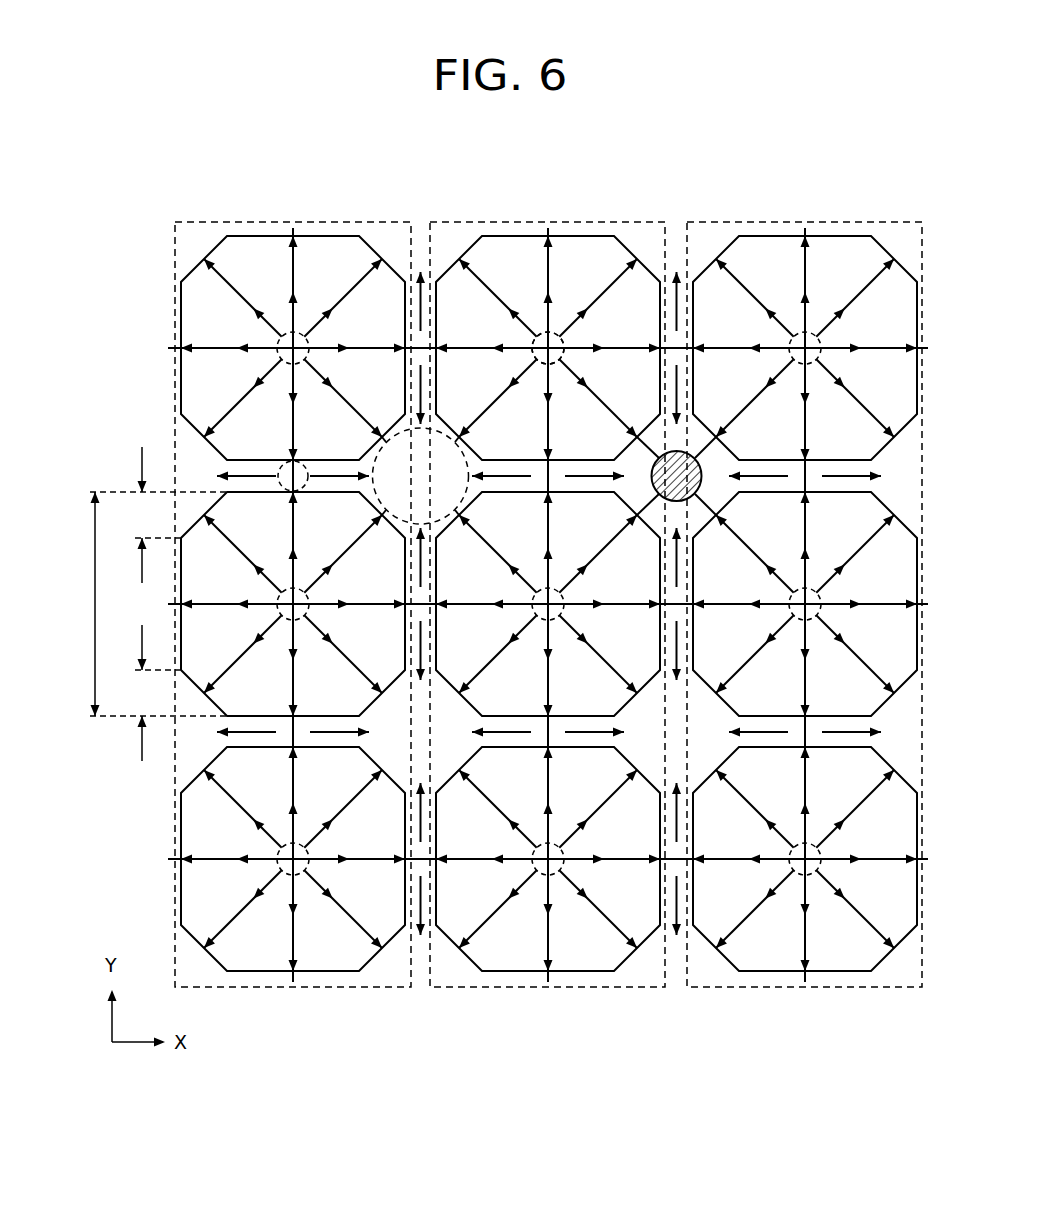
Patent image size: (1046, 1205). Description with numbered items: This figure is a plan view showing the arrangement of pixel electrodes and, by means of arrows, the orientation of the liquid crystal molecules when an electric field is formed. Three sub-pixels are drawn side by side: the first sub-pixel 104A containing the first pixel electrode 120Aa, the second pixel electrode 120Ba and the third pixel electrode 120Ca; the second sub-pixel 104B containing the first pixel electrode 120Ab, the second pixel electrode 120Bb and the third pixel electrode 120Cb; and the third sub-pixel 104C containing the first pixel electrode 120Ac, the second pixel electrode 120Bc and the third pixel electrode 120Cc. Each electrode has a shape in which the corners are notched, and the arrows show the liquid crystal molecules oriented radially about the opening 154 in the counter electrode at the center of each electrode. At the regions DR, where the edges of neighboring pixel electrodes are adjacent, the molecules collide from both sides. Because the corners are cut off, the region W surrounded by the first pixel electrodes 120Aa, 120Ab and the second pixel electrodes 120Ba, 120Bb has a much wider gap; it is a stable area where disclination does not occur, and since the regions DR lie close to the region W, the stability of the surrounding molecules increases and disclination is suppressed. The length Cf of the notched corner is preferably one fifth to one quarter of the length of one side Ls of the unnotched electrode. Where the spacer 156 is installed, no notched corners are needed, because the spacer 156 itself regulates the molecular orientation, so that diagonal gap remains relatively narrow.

The first sub-pixel 104A is at (190, 220).
The second sub-pixel 104B is at (447, 220).
The third sub-pixel 104C is at (702, 220).
The second pixel electrode 120Ba is at (291, 273).
The second pixel electrode 120Bb is at (546, 273).
The second pixel electrode 120Bc is at (800, 273).
The first pixel electrode 120Aa is at (291, 529).
The first pixel electrode 120Ab is at (546, 529).
The first pixel electrode 120Ac is at (878, 529).
The third pixel electrode 120Ca is at (291, 784).
The third pixel electrode 120Cb is at (546, 784).
The third pixel electrode 120Cc is at (800, 784).
The opening 154 is at (557, 333).
The spacer 156 is at (699, 463).
The region W is at (447, 436).
The region DR is at (286, 464).
The length of one side Ls is at (148, 604).
The length of the notched corner Cf is at (146, 604).